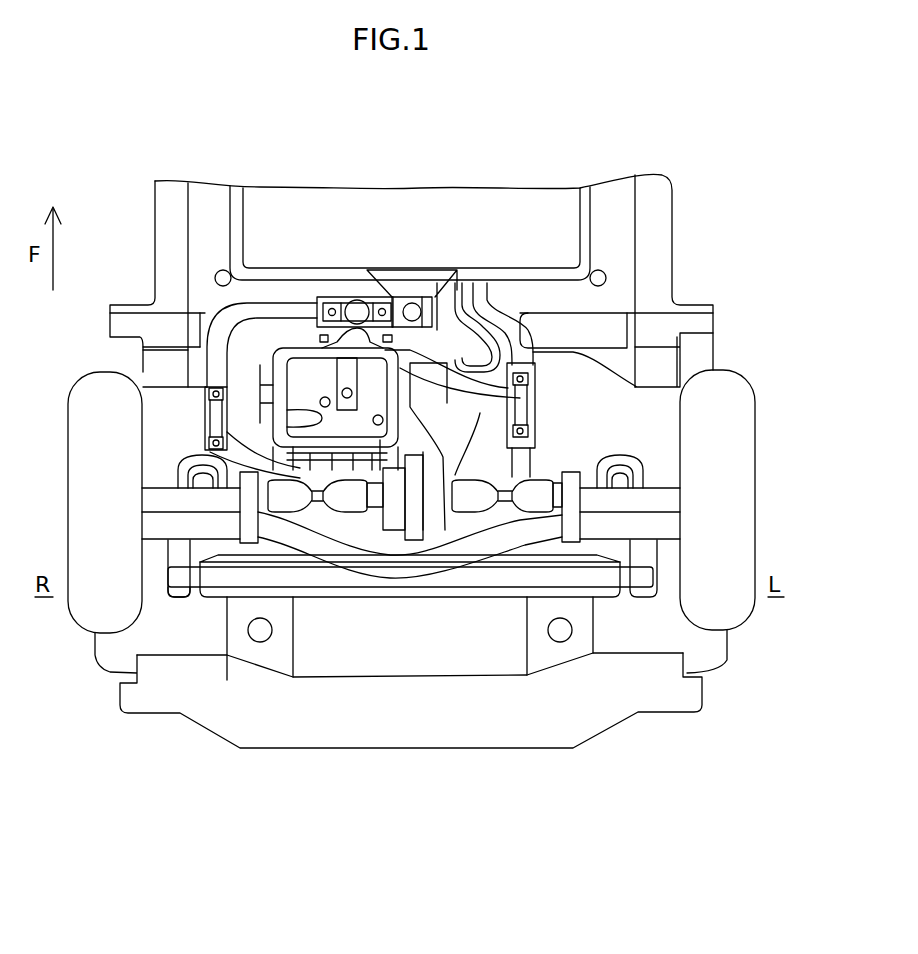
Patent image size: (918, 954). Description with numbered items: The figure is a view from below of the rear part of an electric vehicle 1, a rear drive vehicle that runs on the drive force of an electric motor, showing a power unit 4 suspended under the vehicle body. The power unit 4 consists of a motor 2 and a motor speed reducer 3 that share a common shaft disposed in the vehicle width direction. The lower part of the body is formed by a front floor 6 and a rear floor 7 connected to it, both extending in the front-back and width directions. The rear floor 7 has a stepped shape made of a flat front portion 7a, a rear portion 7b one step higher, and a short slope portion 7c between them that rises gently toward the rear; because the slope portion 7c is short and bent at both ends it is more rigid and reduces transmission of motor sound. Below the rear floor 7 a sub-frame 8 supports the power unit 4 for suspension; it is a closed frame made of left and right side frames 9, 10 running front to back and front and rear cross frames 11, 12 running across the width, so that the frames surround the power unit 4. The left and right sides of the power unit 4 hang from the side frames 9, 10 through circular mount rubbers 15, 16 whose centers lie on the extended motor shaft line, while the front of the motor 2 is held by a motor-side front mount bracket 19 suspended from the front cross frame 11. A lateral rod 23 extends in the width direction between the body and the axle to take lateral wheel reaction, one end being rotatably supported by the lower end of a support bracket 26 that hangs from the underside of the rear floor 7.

The electric vehicle 1 is at (702, 164).
The motor 2 is at (296, 391).
The motor speed reducer 3 is at (465, 423).
The power unit 4 is at (417, 329).
The front floor 6 is at (618, 207).
The rear floor 7 is at (633, 625).
The front portion 7a is at (620, 293).
The rear portion 7b is at (657, 465).
The slope portion 7c is at (657, 367).
The sub-frame 8 is at (308, 293).
The side frame 9 is at (517, 338).
The side frame 10 is at (222, 335).
The front cross frame 11 is at (478, 305).
The rear cross frame 12 is at (253, 457).
The mount rubber 15 is at (522, 392).
The mount rubber 16 is at (207, 418).
The motor-side front mount bracket 19 is at (355, 310).
The lateral rod 23 is at (535, 588).
The support bracket 26 is at (177, 595).